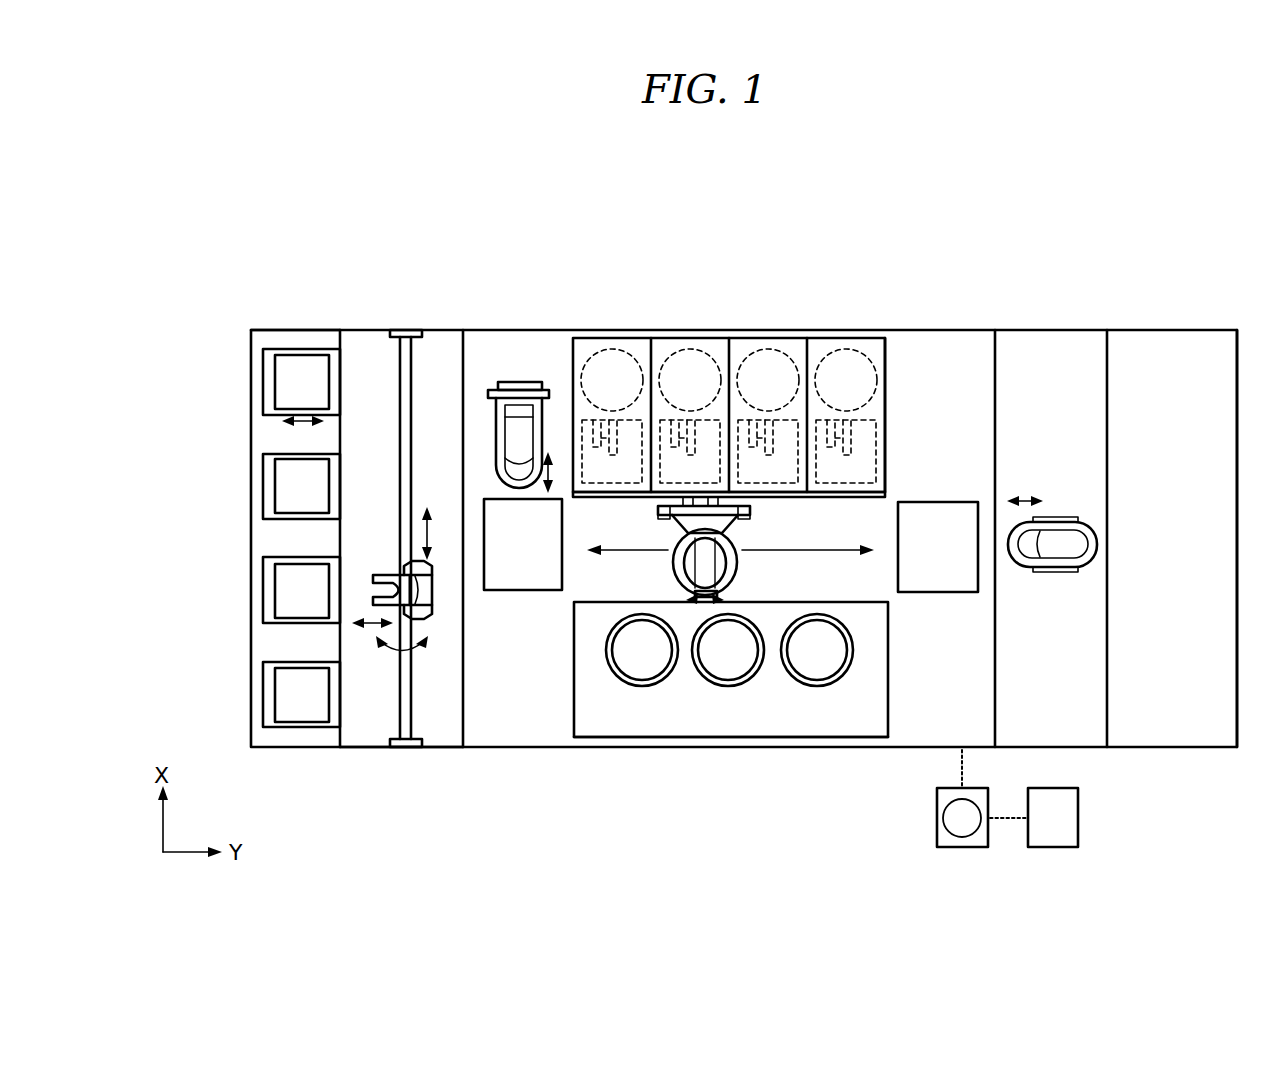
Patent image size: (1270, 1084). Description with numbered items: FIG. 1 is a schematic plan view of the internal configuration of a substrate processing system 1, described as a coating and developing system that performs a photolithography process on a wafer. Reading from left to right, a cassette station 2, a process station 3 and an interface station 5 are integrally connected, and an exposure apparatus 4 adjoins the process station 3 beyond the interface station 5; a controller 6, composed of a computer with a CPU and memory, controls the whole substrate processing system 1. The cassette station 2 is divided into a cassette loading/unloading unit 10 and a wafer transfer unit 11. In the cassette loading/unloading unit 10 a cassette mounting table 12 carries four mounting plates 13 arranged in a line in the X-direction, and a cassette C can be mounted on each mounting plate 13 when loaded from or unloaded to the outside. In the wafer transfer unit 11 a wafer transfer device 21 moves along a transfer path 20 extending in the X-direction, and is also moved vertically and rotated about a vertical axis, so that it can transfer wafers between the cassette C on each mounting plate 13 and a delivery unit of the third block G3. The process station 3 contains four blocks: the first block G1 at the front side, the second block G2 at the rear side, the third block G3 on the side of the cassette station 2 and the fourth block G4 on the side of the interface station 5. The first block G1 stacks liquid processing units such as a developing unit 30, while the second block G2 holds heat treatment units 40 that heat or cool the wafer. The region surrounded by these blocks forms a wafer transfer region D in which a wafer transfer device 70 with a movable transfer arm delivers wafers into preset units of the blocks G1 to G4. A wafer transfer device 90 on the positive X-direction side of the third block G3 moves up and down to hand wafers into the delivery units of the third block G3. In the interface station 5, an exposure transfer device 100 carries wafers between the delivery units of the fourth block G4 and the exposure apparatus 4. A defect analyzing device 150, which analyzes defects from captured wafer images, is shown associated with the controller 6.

The substrate processing system 1 is at (671, 209).
The cassette station 2 is at (463, 330).
The process station 3 is at (995, 330).
The exposure apparatus 4 is at (1237, 330).
The interface station 5 is at (995, 330).
The controller 6 is at (960, 850).
The cassette loading/unloading unit 10 is at (340, 750).
The wafer transfer unit 11 is at (463, 750).
The cassette mounting table 12 is at (258, 343).
The mounting plate 13 is at (264, 374).
The cassette C is at (278, 404).
The transfer path 20 is at (413, 451).
The wafer transfer device 21 is at (431, 618).
The developing unit 30 is at (737, 738).
The heat treatment unit 40 is at (746, 338).
The wafer transfer device 70 is at (755, 508).
The wafer transfer device 90 is at (514, 381).
The exposure transfer device 100 is at (1079, 518).
The defect analyzing device 150 is at (1053, 850).
The wafer transfer region D is at (805, 590).
The first block G1 is at (830, 748).
The second block G2 is at (882, 328).
The third block G3 is at (521, 593).
The fourth block G4 is at (942, 496).